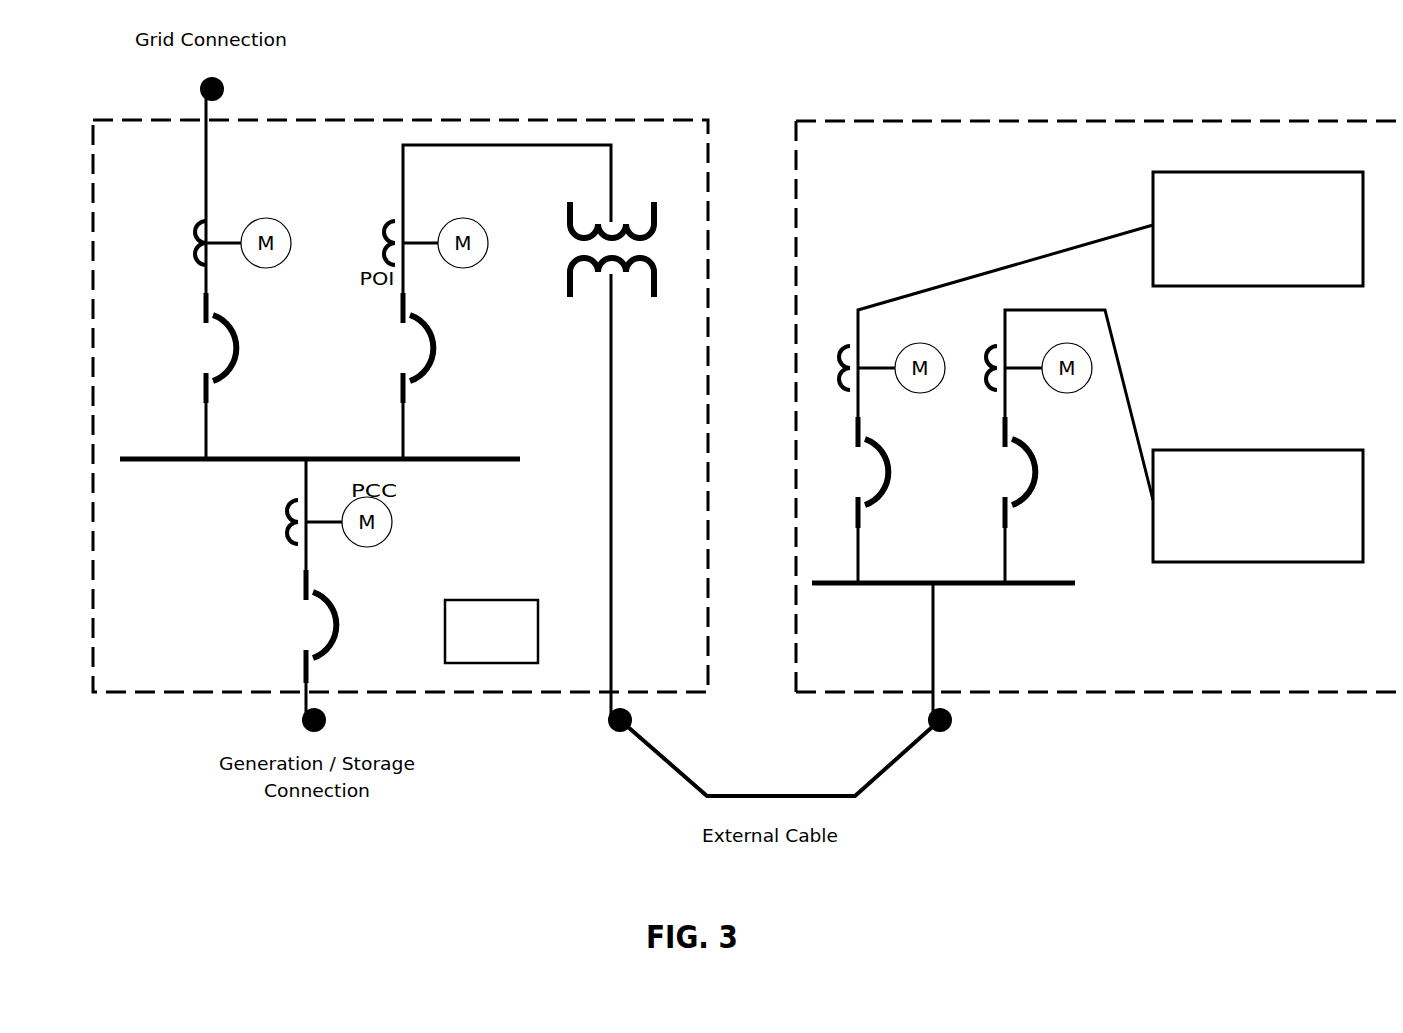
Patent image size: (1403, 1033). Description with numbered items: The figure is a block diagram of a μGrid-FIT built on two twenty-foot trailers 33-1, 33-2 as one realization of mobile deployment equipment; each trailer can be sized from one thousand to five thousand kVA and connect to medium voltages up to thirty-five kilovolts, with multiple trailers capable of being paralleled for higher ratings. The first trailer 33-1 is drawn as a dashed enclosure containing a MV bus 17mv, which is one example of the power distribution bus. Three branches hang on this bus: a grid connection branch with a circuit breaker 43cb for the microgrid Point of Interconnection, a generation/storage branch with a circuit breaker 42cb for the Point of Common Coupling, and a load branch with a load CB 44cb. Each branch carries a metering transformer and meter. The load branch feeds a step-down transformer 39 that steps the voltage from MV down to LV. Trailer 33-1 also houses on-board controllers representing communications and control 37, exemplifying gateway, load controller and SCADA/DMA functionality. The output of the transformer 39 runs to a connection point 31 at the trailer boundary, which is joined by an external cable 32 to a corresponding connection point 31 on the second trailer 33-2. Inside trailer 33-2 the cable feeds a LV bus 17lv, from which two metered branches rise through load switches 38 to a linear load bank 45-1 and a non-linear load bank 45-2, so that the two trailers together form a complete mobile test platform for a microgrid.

The trailer 33-1 is at (500, 82).
The trailer 33-2 is at (1183, 82).
The circuit breaker for microgrid Point of Interconnection 43cb is at (262, 371).
The load CB 44cb is at (463, 371).
The circuit breaker for the generation/storage Point of Common Coupling 42cb is at (367, 649).
The MV bus 17mv is at (375, 443).
The LV bus 17lv is at (1148, 620).
The communications and control 37 is at (480, 654).
The step-down transformer 39 is at (668, 269).
The load switches 38 is at (898, 488).
The linear load bank 45-1 is at (1238, 252).
The non-linear load bank 45-2 is at (1238, 528).
The connection point 31 is at (780, 726).
The external cable 32 is at (883, 775).